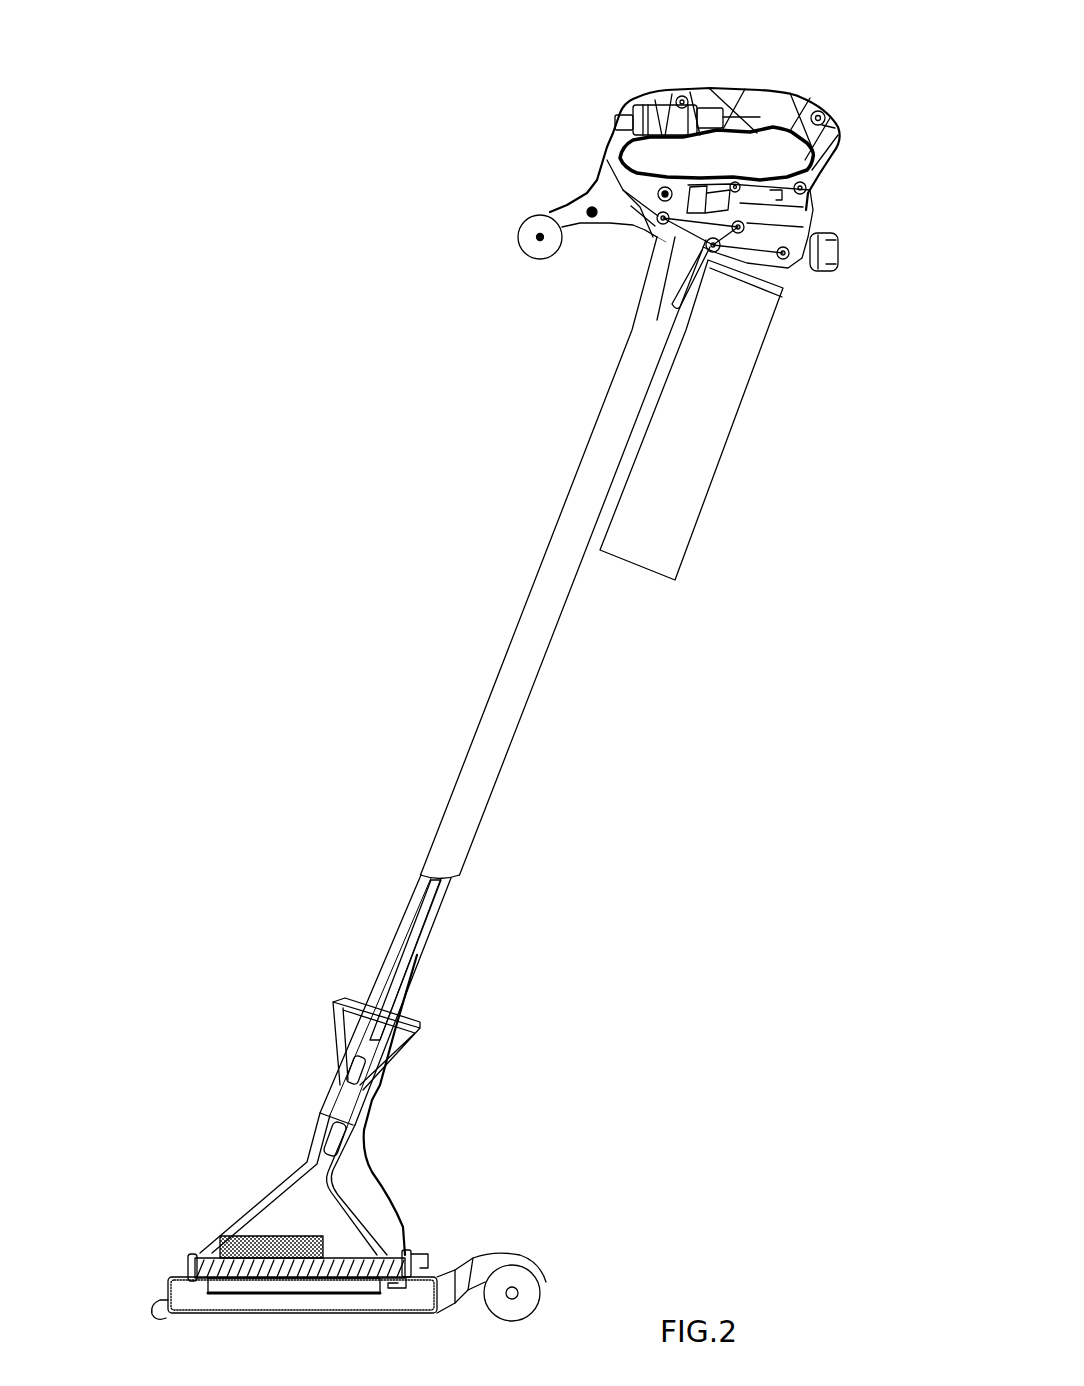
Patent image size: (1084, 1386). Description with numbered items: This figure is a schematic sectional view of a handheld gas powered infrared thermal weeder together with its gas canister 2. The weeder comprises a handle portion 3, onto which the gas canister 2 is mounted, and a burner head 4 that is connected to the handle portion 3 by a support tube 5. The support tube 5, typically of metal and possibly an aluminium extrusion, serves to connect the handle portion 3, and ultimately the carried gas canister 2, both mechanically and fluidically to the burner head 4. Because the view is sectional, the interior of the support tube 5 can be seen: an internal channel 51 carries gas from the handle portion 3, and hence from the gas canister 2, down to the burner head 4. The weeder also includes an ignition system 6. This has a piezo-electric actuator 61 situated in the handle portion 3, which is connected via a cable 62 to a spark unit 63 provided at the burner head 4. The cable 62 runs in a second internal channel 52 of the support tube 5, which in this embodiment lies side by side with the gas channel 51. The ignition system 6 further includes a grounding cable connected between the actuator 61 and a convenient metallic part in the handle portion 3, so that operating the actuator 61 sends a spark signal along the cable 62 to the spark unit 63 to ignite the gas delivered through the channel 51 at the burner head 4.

The gas canister 2 is at (692, 455).
The handle portion 3 is at (584, 113).
The burner head 4 is at (267, 1183).
The support tube 5 is at (487, 702).
The ignition system 6 is at (683, 72).
The internal channel 51 is at (423, 897).
The second internal channel 52 is at (432, 927).
The piezo-electric actuator 61 is at (743, 102).
The cable 62 is at (413, 975).
The spark unit 63 is at (403, 1286).